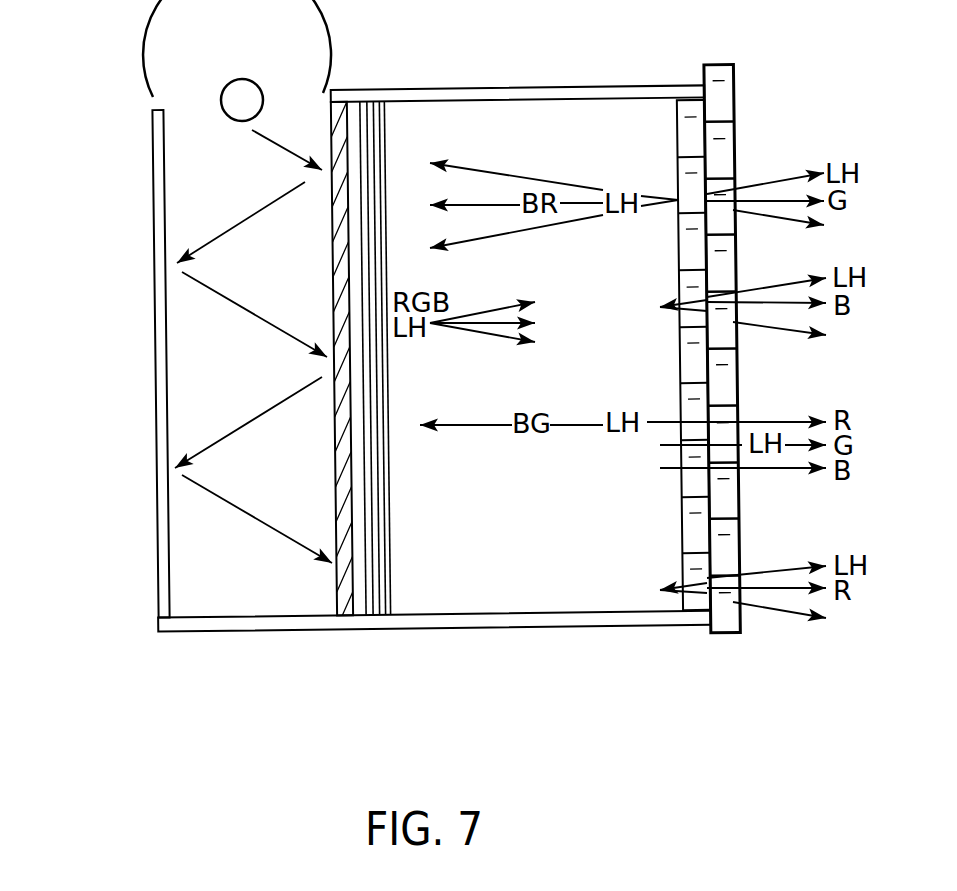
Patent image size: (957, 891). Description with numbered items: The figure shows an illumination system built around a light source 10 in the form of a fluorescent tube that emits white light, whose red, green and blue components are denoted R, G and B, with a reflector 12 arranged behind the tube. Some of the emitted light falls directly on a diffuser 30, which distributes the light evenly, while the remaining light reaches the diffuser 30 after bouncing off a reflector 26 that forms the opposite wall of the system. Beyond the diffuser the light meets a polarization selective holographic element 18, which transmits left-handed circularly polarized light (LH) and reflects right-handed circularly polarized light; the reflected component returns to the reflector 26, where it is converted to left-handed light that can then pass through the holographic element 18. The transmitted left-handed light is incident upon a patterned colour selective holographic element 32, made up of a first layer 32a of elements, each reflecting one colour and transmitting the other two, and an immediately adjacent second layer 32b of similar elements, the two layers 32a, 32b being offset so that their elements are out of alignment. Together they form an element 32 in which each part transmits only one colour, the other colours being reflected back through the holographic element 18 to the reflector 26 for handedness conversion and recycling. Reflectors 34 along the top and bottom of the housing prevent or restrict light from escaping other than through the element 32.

The light source 10 is at (222, 97).
The reflector 12 is at (280, 48).
The polarization selective holographic element 18 is at (377, 125).
The reflector 26 is at (152, 182).
The diffuser 30 is at (340, 593).
The patterned colour selective holographic element 32 is at (698, 418).
The first layer 32a is at (687, 500).
The second layer 32b is at (733, 528).
The reflectors 34 is at (632, 92).